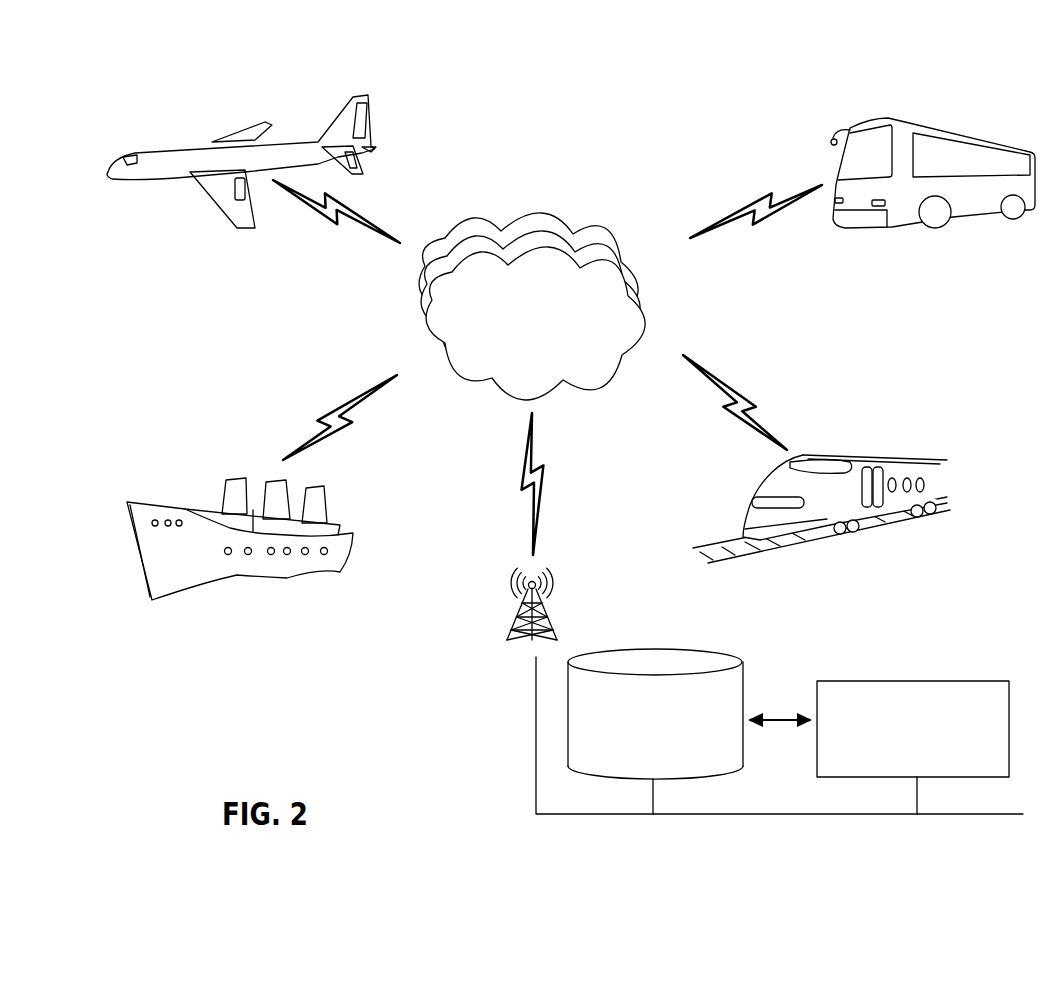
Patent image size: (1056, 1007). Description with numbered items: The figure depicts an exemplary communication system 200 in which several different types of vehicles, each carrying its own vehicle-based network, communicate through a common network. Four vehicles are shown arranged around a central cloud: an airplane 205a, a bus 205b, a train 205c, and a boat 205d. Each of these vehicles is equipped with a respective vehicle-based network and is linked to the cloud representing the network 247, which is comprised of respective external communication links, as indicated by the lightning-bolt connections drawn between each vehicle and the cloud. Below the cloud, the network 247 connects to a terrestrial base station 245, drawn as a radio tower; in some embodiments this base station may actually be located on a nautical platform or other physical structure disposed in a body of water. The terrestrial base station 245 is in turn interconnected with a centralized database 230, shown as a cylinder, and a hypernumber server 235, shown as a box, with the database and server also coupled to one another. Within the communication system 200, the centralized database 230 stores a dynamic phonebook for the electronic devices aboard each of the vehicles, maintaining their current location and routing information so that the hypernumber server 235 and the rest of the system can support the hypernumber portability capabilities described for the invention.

The communication system 200 is at (693, 51).
The airplane 205a is at (362, 94).
The bus 205b is at (918, 124).
The train 205c is at (877, 457).
The boat 205d is at (320, 493).
The network 247 is at (543, 212).
The terrestrial base station 245 is at (548, 618).
The centralized database 230 is at (698, 649).
The hypernumber server 235 is at (978, 680).